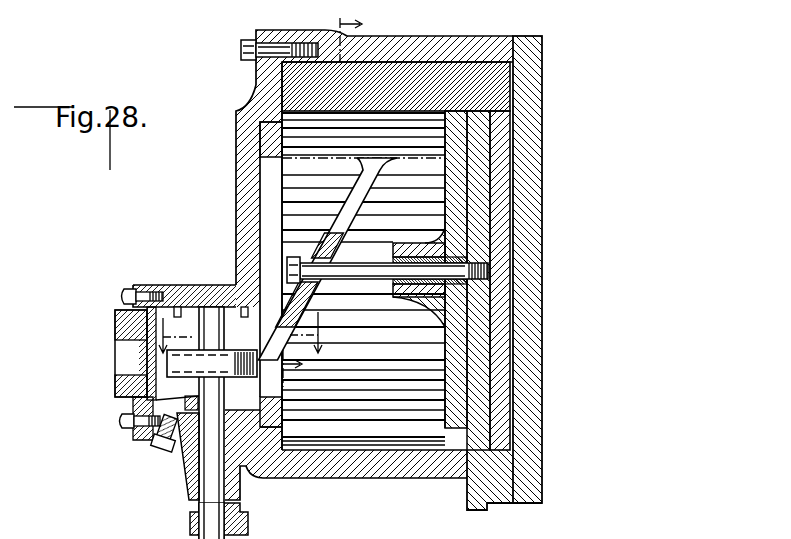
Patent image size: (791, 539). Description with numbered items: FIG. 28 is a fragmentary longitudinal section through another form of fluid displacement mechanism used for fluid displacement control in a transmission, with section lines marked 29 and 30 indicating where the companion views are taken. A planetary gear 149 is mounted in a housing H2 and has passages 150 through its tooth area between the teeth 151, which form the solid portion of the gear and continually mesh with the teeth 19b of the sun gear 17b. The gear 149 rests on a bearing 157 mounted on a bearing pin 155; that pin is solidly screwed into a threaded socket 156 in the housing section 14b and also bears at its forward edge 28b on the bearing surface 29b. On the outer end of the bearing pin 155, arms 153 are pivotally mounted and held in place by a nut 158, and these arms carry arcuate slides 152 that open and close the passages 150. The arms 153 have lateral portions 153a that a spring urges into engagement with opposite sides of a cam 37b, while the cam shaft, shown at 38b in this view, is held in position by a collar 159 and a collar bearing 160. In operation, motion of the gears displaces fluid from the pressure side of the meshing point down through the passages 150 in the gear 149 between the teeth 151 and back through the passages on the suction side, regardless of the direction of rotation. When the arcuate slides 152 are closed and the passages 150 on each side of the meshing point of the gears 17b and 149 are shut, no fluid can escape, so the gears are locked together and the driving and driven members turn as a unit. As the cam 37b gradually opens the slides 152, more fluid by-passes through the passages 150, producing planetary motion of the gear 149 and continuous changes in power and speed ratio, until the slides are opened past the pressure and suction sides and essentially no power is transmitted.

The teeth of the sun gear 19b is at (443, 79).
The forward edge of the bearing pin 28b is at (258, 104).
The bearing surface 29b is at (262, 140).
The housing H2 is at (543, 180).
The sun gear 17b is at (543, 425).
The passages 150 is at (313, 105).
The teeth 151 is at (430, 114).
The arcuate slides 152 is at (433, 144).
The arms 153 is at (282, 203).
The lateral portions 153a is at (282, 310).
The bearing pin 155 is at (427, 247).
The threaded socket 156 is at (543, 281).
The bearing 157 is at (427, 284).
The nut 158 is at (285, 268).
The housing section 14b is at (542, 350).
The planetary gear 149 is at (543, 375).
The collar bearing 160 is at (196, 290).
The cam 37b is at (178, 362).
The collar 159 is at (185, 399).
The shaft 38b is at (212, 450).
The section line 29- 29 is at (326, 202).
The section line 30- 30 is at (254, 332).